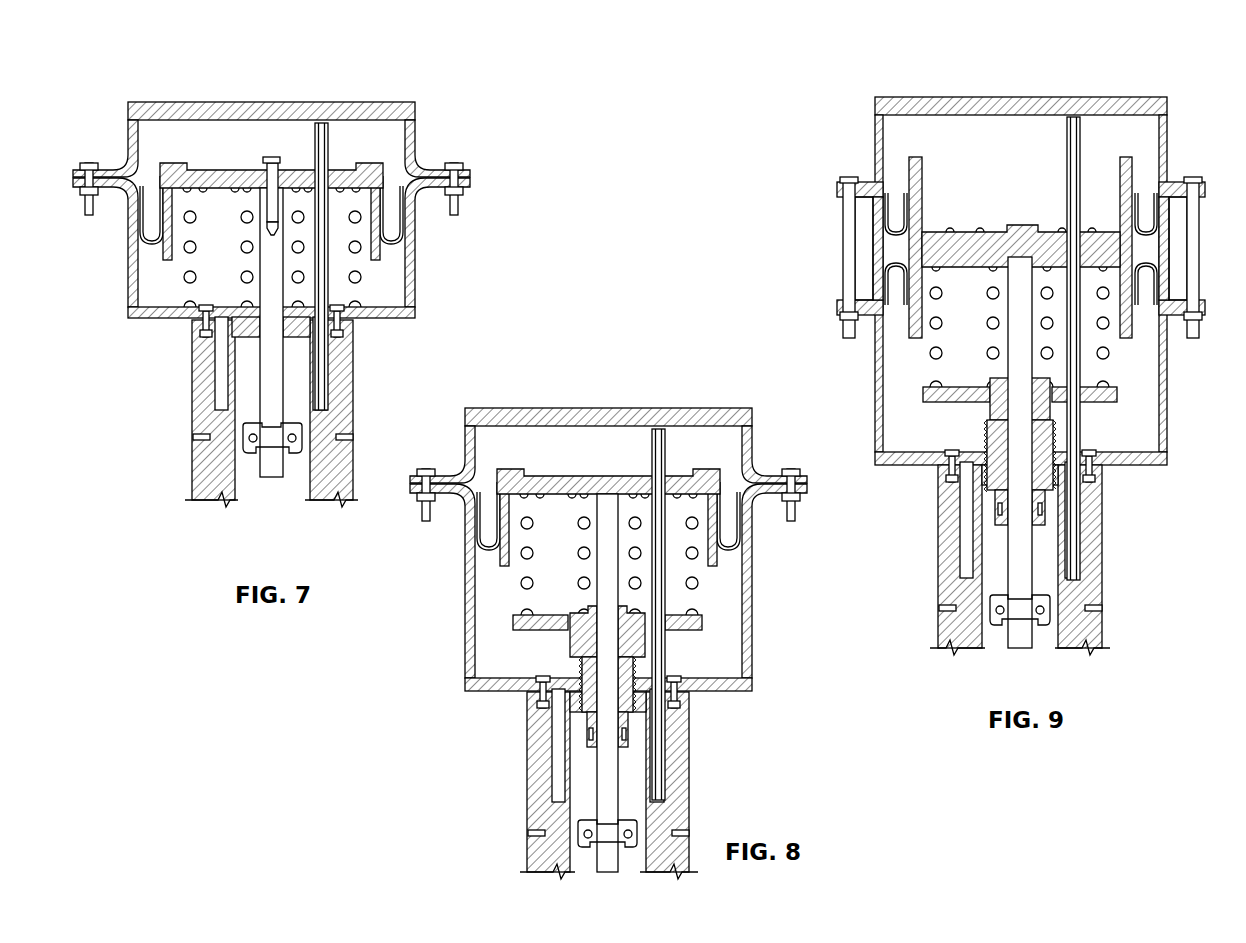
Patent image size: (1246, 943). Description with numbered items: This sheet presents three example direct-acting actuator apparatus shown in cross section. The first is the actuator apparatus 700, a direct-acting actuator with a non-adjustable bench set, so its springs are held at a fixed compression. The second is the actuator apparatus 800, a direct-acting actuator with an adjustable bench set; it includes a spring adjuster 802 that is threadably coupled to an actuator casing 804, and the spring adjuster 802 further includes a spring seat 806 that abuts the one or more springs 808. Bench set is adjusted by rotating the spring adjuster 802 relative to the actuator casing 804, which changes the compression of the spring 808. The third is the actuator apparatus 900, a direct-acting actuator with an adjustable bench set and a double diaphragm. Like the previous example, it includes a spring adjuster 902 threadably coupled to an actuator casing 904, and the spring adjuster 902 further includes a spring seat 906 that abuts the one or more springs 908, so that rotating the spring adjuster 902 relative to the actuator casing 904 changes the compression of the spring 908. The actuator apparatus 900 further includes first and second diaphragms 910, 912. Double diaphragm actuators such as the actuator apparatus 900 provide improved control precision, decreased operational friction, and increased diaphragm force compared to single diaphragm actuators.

In FIG. 7, the actuator apparatus 700 is at (172, 66).
In FIG. 8, the actuator apparatus 800 is at (602, 601).
In FIG. 8, the spring adjuster 802 is at (628, 722).
In FIG. 8, the actuator casing 804 is at (490, 689).
In FIG. 8, the spring seat 806 is at (694, 622).
In FIG. 8, the springs 808 is at (521, 584).
In FIG. 9, the actuator apparatus 900 is at (1022, 340).
In FIG. 9, the spring adjuster 902 is at (1042, 495).
In FIG. 9, the actuator casing 904 is at (907, 463).
In FIG. 9, the spring seat 906 is at (1112, 393).
In FIG. 9, the springs 908 is at (930, 355).
In FIG. 9, the first diaphragm 910 is at (1145, 207).
In FIG. 9, the second diaphragm 912 is at (1145, 268).